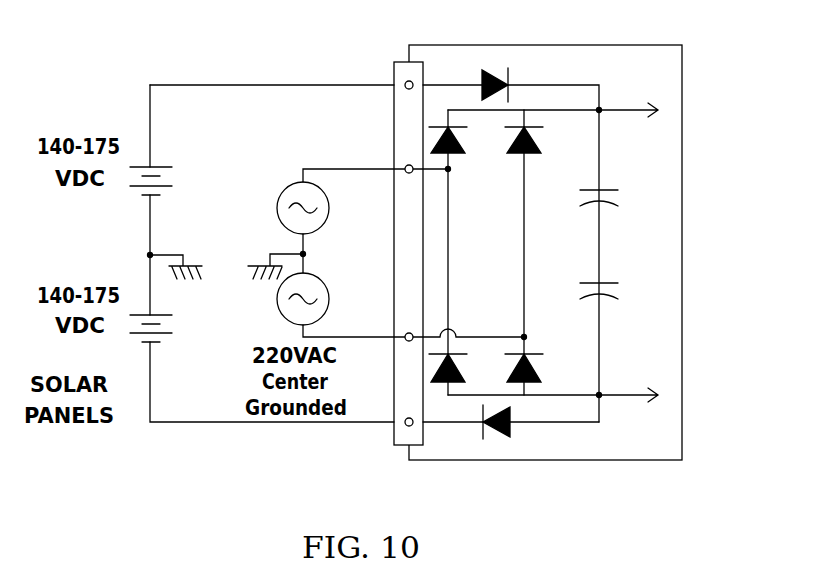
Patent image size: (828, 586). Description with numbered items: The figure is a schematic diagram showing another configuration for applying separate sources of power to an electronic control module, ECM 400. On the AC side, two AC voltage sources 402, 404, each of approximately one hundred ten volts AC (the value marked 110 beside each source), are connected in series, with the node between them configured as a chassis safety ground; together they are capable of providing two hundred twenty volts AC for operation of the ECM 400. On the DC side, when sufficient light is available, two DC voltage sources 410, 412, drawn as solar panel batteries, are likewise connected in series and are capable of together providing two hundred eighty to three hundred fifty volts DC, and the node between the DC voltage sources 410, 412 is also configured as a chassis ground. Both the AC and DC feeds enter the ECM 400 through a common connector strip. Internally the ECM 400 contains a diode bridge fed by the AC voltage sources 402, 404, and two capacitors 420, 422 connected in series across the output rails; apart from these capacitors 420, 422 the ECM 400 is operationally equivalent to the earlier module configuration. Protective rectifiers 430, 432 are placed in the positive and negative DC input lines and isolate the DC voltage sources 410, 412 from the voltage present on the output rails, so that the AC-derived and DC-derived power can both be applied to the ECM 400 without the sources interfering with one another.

The AC power source 110 is at (295, 253).
The ECM 400 is at (683, 148).
The AC voltage source 402 is at (277, 210).
The AC voltage source 404 is at (277, 301).
The DC voltage source 410 is at (172, 176).
The DC voltage source 412 is at (172, 333).
The capacitor 420 is at (612, 197).
The capacitor 422 is at (612, 293).
The protective rectifier 430 is at (497, 72).
The protective rectifier 432 is at (497, 434).